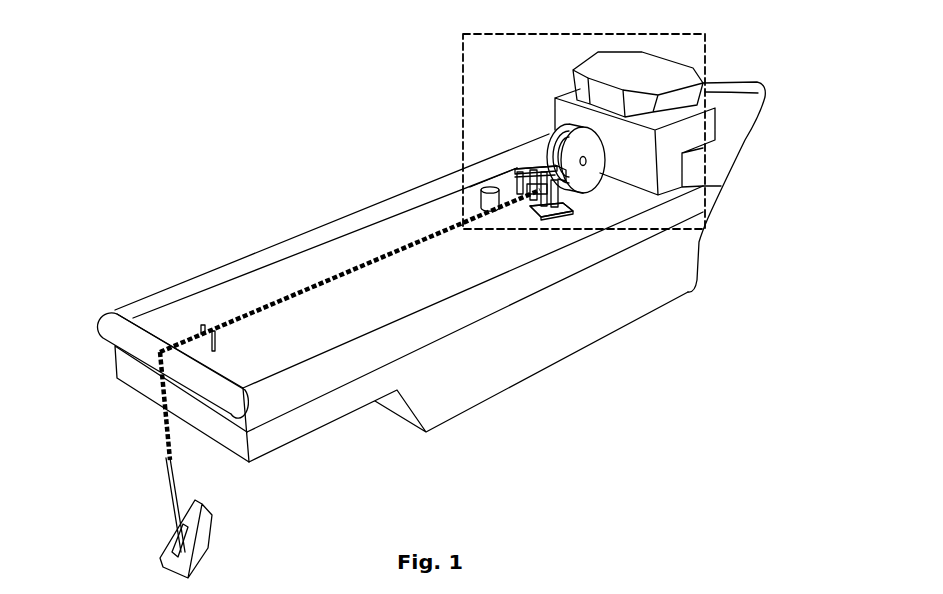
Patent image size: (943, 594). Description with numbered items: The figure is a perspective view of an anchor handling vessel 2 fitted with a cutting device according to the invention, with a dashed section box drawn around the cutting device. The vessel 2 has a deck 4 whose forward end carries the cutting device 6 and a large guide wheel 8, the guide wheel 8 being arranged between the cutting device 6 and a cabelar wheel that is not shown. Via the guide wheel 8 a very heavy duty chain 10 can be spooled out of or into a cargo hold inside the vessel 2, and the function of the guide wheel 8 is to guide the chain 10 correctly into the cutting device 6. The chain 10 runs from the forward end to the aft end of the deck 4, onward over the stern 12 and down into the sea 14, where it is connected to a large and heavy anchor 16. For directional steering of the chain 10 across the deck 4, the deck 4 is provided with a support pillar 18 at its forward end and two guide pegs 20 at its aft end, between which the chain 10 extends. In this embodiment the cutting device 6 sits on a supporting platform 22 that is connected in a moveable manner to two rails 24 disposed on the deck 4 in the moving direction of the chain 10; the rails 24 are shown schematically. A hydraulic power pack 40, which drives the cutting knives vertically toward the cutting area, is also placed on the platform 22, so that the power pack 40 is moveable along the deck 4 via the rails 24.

The anchor handling vessel 2 is at (733, 103).
The deck 4 is at (370, 247).
The cutting device 6 is at (522, 222).
The guide wheel 8 is at (577, 147).
The chain 10 is at (304, 297).
The stern 12 is at (108, 325).
The sea 14 is at (361, 493).
The anchor 16 is at (193, 548).
The support pillar 18 is at (489, 204).
The guide pegs 20 is at (201, 326).
The supporting platform 22 is at (540, 212).
The rails 24 is at (558, 208).
The hydraulic power pack 40 is at (512, 159).